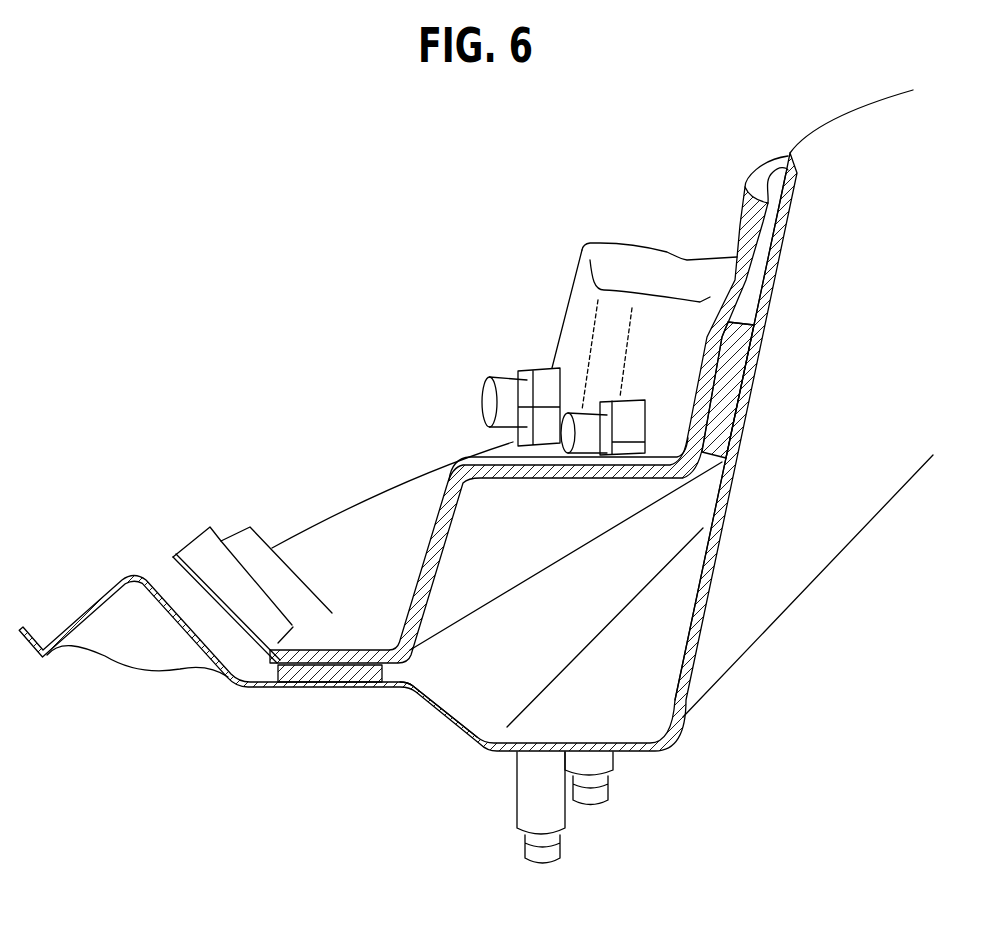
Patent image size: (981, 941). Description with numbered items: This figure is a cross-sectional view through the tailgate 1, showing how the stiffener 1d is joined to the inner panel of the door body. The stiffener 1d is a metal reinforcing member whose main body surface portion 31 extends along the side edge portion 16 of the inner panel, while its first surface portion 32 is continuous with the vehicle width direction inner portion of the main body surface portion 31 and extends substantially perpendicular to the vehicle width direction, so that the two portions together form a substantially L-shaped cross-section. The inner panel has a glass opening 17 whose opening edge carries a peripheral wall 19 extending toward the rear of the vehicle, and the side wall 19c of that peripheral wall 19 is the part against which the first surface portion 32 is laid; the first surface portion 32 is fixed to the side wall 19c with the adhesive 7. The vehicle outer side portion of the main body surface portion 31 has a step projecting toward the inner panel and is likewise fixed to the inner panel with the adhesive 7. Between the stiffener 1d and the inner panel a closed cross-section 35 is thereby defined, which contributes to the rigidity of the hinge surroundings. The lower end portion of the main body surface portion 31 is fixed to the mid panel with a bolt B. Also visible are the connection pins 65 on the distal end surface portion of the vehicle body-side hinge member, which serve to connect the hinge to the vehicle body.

The tailgate 1 is at (529, 496).
The stiffener 1d is at (453, 480).
The adhesive 7 is at (732, 390).
The side edge portion 16 is at (407, 693).
The glass opening 17 is at (725, 670).
The peripheral wall 19 is at (466, 452).
The side wall 19c is at (710, 585).
The main body surface portion 31 is at (350, 647).
The first surface portion 32 is at (738, 298).
The closed cross-section 35 is at (562, 630).
The connection pins 65 is at (595, 782).
The bolt B is at (587, 430).